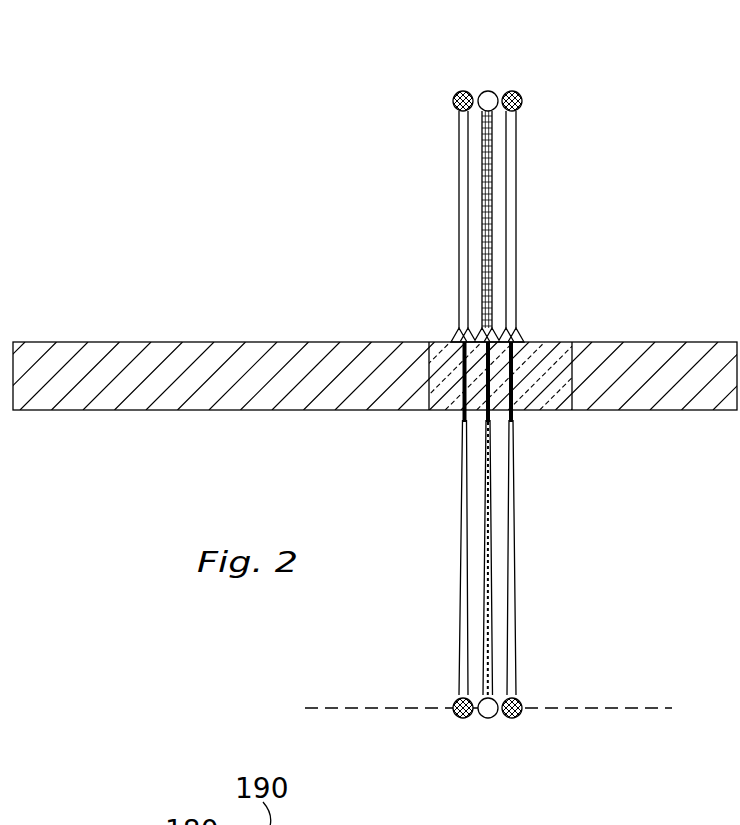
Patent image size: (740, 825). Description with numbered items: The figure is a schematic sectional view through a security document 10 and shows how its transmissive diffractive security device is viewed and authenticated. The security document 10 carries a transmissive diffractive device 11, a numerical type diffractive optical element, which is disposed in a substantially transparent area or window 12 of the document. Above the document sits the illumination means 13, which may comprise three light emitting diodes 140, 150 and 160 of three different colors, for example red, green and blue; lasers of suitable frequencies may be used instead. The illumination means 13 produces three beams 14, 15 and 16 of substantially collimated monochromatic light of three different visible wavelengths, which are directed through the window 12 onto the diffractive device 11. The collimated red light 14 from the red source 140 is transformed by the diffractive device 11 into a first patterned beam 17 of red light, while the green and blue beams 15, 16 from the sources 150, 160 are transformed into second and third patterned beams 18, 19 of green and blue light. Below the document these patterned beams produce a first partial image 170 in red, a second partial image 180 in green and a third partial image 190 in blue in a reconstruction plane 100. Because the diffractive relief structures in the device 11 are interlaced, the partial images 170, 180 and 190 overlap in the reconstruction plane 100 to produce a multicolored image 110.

The security document 10 is at (174, 367).
The transmissive diffractive device 11 is at (455, 330).
The window 12 is at (546, 398).
The illumination means 13 is at (526, 106).
The beam 14 is at (516, 157).
The beam 15 is at (492, 248).
The beam 16 is at (459, 207).
The first patterned beam 17 is at (515, 543).
The second patterned beam 18 is at (484, 488).
The third patterned beam 19 is at (461, 578).
The reconstruction plane 100 is at (638, 708).
The multicolored image 110 is at (452, 702).
The light emitting diode 140 is at (518, 94).
The light emitting diode 150 is at (486, 91).
The light emitting diode 160 is at (453, 102).
The first partial image 170 is at (516, 720).
The second partial image 180 is at (490, 718).
The third partial image 190 is at (460, 720).